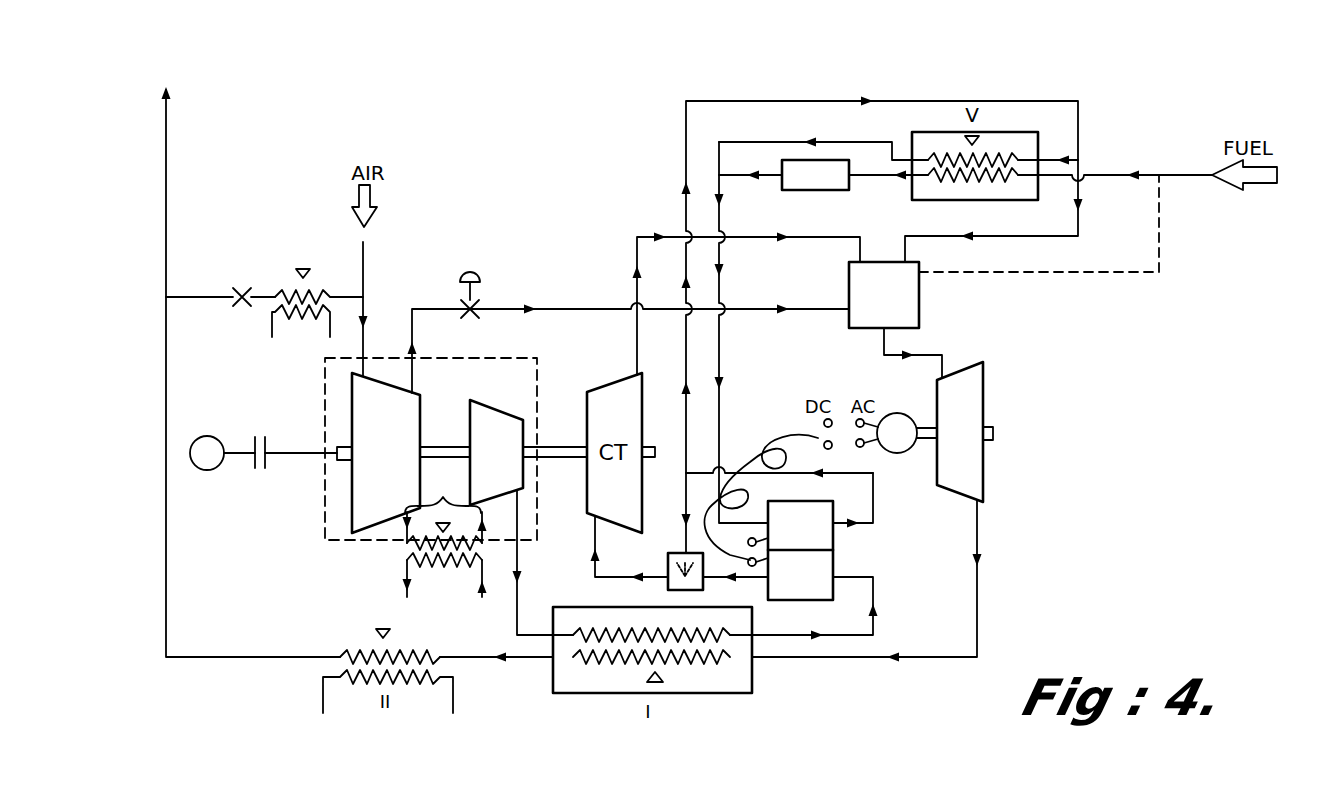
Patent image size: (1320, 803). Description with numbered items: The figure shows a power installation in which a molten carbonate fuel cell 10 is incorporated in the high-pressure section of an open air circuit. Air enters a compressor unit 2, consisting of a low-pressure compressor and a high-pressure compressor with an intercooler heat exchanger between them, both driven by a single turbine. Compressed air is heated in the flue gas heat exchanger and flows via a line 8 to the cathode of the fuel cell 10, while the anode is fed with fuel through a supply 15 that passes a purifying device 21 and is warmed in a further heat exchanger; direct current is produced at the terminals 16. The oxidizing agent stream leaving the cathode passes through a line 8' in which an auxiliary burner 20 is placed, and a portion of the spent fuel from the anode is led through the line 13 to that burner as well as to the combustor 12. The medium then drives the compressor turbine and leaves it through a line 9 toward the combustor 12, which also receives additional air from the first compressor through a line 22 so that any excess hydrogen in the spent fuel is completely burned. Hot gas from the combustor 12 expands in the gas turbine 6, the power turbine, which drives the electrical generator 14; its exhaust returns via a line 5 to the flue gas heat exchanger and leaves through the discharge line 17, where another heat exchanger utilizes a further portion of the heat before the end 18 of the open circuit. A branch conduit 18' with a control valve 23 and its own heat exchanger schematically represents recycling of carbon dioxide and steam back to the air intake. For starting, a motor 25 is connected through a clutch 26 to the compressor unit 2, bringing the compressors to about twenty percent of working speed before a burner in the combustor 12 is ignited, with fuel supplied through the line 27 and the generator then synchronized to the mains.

The compressor unit 2 is at (325, 388).
The line 5 is at (977, 595).
The gas turbine 6 is at (983, 395).
The line 8 is at (715, 565).
The line 8' is at (696, 573).
The line 9 is at (635, 365).
The fuel cell 10 is at (833, 540).
The combustor 12 is at (919, 295).
The supply of spent fuel 13 is at (820, 101).
The electrical generator 14 is at (906, 412).
The supply of fuel 15 is at (1107, 173).
The terminals 16 is at (758, 542).
The discharge line 17 is at (517, 660).
The end of the open circuit 18 is at (251, 396).
The branch conduit 18' is at (264, 309).
The auxiliary burner 20 is at (668, 584).
The purifying device 21 is at (805, 190).
The line 22 is at (413, 373).
The control valve 23 is at (242, 286).
The motor 25 is at (210, 470).
The clutch 26 is at (258, 432).
The line 27 is at (1161, 230).